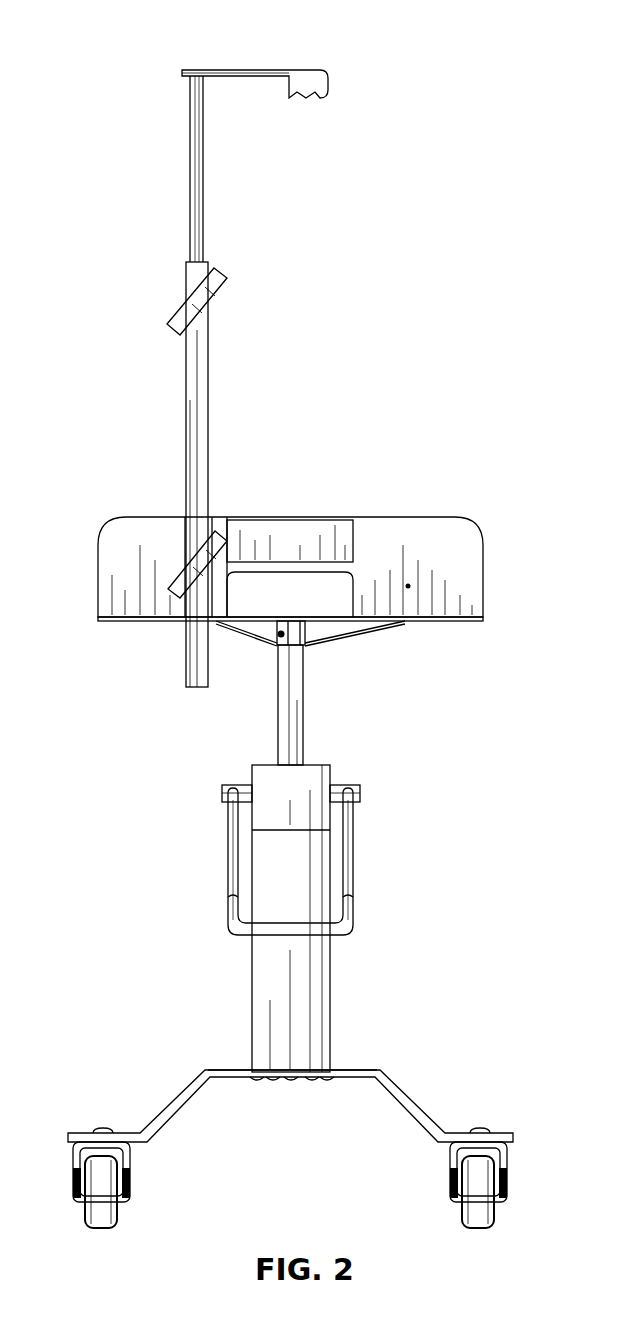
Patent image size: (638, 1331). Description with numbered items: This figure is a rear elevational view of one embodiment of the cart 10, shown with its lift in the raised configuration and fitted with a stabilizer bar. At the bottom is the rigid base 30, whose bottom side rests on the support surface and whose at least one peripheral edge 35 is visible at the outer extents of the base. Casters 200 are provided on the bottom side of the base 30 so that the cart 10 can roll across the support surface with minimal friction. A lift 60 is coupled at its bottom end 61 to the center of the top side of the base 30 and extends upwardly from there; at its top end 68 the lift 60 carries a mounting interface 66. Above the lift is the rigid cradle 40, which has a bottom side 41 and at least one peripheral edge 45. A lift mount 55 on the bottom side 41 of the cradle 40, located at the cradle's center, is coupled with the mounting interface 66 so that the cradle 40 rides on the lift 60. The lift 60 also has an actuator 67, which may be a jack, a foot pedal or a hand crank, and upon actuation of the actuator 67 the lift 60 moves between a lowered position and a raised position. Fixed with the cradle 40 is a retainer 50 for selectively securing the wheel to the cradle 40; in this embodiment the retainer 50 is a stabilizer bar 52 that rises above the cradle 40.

The cart 10 is at (110, 30).
The retainer 50 is at (205, 70).
The stabilizer bar 52 is at (255, 84).
The cradle 40 is at (98, 618).
The peripheral edge 45 is at (484, 572).
The lift mount 55 is at (305, 643).
The bottom side 41 is at (397, 625).
The top end 68 is at (277, 640).
The mounting interface 66 is at (303, 648).
The lift 60 is at (252, 770).
The bottom end 61 is at (295, 1072).
The actuator 67 is at (228, 858).
The base 30 is at (520, 1117).
The peripheral edge 35 is at (208, 1070).
The caster 200 is at (95, 1195).